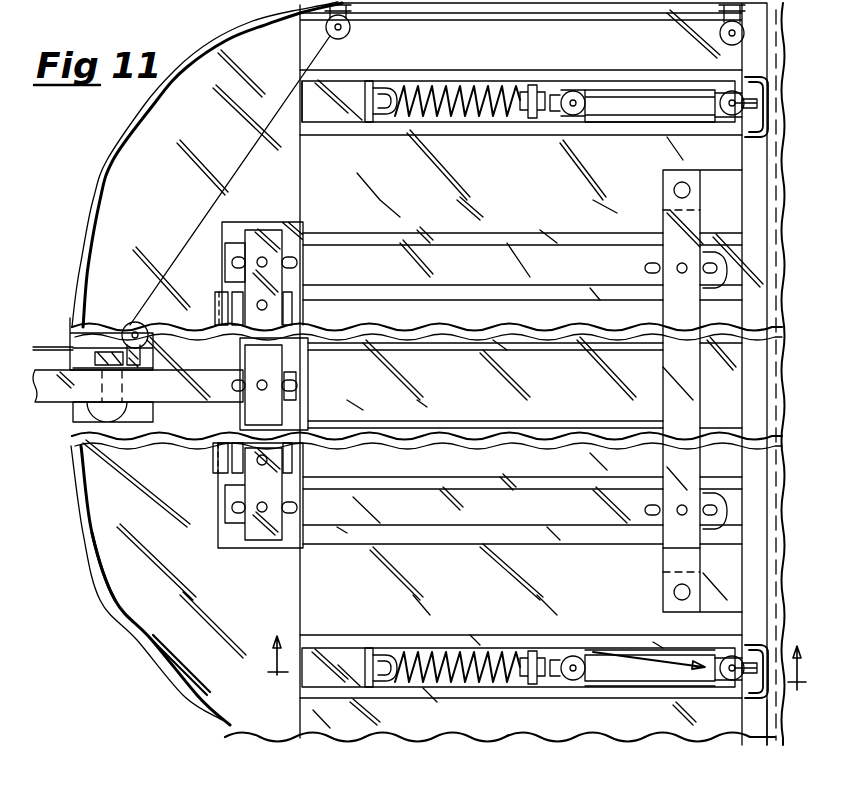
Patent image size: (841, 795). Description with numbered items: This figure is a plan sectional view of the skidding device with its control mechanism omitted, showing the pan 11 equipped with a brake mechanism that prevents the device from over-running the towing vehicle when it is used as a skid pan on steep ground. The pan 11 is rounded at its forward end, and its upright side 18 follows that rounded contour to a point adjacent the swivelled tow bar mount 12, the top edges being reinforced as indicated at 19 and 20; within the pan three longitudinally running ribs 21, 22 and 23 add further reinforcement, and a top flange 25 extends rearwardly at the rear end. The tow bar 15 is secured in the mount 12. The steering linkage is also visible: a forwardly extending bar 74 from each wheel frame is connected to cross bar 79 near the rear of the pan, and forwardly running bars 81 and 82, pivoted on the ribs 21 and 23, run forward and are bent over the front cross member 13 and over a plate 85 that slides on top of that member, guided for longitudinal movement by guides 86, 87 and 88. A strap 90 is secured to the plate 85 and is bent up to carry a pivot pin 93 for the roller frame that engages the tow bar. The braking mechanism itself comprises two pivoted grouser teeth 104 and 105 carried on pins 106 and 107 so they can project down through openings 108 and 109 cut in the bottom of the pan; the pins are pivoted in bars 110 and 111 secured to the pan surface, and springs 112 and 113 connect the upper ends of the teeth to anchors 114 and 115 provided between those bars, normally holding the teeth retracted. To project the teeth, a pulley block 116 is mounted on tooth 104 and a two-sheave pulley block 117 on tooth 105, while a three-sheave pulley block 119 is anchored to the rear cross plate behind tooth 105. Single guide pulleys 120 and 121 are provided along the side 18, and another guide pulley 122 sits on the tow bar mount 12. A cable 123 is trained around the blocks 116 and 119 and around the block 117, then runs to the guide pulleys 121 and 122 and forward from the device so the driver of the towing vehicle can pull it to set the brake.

The pan 11 is at (313, 728).
The tow bar mount 12 is at (72, 422).
The front cross member 13 is at (130, 572).
The tow bar 15 is at (87, 412).
The side 18 is at (277, 18).
The reinforcement of top edge 19 is at (160, 670).
The reinforcement of top edge 20 is at (127, 133).
The longitudinal rib 21 is at (437, 543).
The longitudinal rib 22 is at (503, 409).
The longitudinal rib 23 is at (450, 238).
The top flange 25 is at (777, 730).
The forwardly extending bar 74 is at (722, 172).
The cross bar 79 is at (668, 553).
The forwardly running bar 81 is at (457, 523).
The forwardly running bar 82 is at (375, 253).
The plate 85 is at (220, 538).
The guide 86 is at (214, 460).
The guide 87 is at (218, 300).
The guide 88 is at (300, 373).
The strap 90 is at (265, 528).
The pivot pin 93 is at (262, 390).
The grouser tooth 104 is at (617, 673).
The grouser tooth 105 is at (637, 105).
The pin 106 is at (530, 703).
The pin 107 is at (535, 68).
The opening 108 is at (667, 685).
The opening 109 is at (680, 90).
The bar 110 is at (390, 135).
The bar 111 is at (425, 50).
The spring 112 is at (407, 668).
The spring 113 is at (453, 115).
The anchor 114 is at (360, 655).
The anchor 115 is at (363, 107).
The pulley block 116 is at (632, 639).
The pulley block 117 is at (570, 118).
The pulley block 119 is at (730, 95).
The guide pulley 120 is at (746, 38).
The guide pulley 121 is at (340, 42).
The guide pulley 122 is at (117, 328).
The cable 123 is at (195, 245).